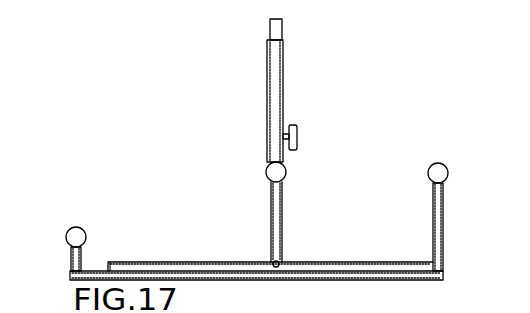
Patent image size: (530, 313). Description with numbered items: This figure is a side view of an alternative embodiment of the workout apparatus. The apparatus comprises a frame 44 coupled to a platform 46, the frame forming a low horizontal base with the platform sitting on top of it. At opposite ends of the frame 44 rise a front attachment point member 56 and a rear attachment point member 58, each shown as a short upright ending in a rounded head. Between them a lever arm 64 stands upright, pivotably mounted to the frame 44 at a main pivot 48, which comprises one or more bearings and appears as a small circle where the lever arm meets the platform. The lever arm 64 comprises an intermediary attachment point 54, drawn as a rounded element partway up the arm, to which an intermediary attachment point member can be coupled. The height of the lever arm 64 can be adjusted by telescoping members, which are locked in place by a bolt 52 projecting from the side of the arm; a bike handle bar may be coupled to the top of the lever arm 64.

The frame 44 is at (276, 281).
The platform 46 is at (191, 260).
The main pivot 48 is at (278, 261).
The bolt 52 is at (293, 122).
The intermediary attachment point 54 is at (285, 176).
The front attachment point member 56 is at (77, 230).
The rear attachment point member 58 is at (437, 170).
The lever arm 64 is at (280, 32).